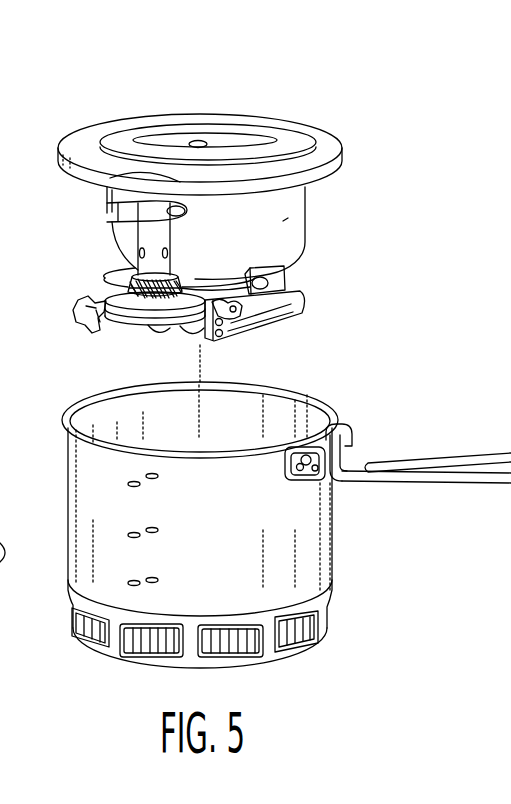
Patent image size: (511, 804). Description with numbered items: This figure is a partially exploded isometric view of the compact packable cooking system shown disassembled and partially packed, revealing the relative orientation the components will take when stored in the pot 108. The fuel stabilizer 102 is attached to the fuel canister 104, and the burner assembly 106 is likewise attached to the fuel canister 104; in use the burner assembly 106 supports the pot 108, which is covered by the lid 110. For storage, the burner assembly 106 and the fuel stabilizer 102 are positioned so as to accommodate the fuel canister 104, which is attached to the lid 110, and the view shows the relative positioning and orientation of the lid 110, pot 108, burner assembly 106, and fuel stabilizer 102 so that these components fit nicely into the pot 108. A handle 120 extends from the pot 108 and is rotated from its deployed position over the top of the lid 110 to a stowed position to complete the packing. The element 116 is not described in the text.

The fuel stabilizer 102 is at (283, 317).
The fuel canister 104 is at (288, 218).
The burner assembly 106 is at (150, 236).
The pot 108 is at (312, 562).
The lid 110 is at (293, 142).
The component 116 is at (500, 291).
The handle 120 is at (432, 477).